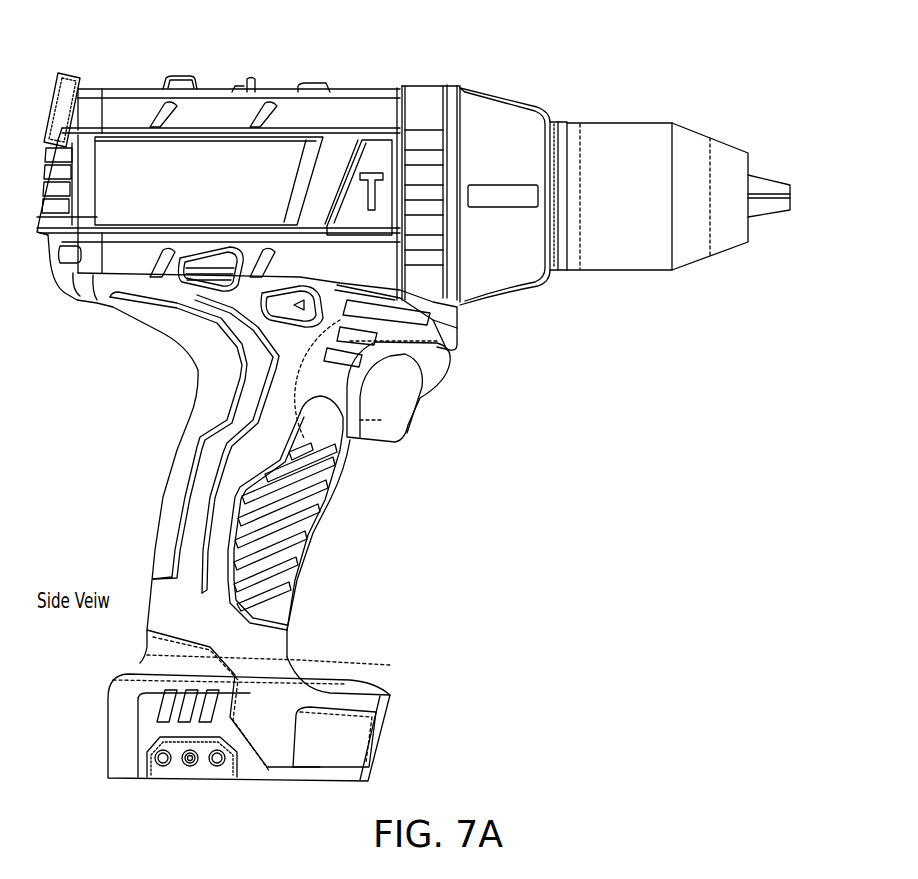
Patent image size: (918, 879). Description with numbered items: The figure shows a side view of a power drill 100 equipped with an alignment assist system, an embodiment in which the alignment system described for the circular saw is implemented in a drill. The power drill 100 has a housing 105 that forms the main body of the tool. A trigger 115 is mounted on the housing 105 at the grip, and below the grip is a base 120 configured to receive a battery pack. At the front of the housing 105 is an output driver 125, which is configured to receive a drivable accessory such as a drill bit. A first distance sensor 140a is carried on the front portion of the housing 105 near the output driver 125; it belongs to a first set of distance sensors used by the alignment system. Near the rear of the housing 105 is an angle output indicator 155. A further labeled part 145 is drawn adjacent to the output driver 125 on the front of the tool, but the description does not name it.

The power drill 100 is at (672, 101).
The housing 105 is at (287, 87).
The trigger 115 is at (397, 420).
The base 120 is at (387, 735).
The output driver 125 is at (760, 217).
The first distance sensor 140a is at (532, 193).
The collar ring 145 is at (553, 253).
The angle output indicator 155 is at (73, 73).